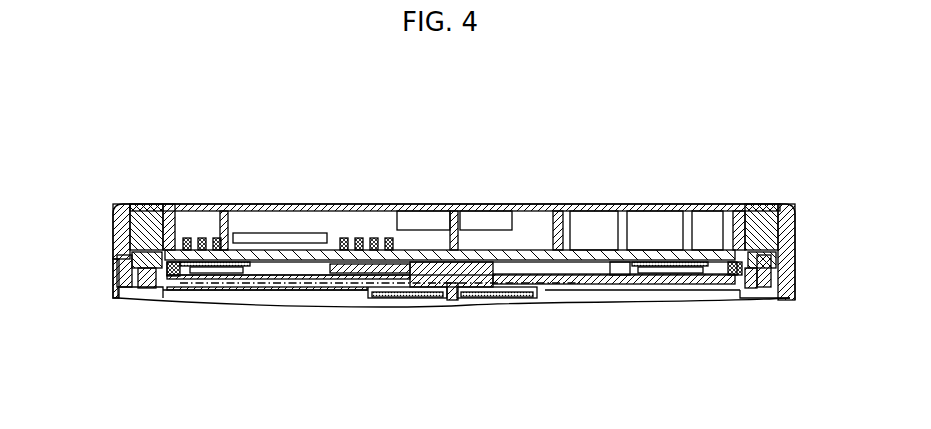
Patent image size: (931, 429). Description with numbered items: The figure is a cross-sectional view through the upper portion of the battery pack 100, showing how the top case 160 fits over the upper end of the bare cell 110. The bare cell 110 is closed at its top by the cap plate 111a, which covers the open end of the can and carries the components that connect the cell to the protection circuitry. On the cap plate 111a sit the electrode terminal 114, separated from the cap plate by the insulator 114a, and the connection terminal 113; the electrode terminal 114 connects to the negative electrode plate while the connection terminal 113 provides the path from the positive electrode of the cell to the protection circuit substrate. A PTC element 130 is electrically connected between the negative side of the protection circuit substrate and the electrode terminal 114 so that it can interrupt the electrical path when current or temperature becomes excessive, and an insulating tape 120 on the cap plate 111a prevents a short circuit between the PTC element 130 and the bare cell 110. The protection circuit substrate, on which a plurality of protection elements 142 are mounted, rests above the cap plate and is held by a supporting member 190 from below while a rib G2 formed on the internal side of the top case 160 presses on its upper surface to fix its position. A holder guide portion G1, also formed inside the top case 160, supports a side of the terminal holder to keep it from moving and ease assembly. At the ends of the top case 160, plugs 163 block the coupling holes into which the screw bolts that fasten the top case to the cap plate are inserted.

The battery pack 100 is at (138, 121).
The bare cell 110 is at (527, 236).
The cap plate 111a is at (610, 276).
The connection terminal 113 is at (573, 284).
The electrode terminal 114 is at (450, 292).
The insulator 114a is at (417, 291).
The insulating tape 120 is at (290, 281).
The PTC element 130 is at (360, 252).
The protection elements 142 is at (305, 211).
The top case 160 is at (790, 208).
The plug 163 is at (148, 220).
The supporting member 190 is at (220, 266).
The holder guide portion G1 is at (560, 225).
The rib G2 is at (170, 222).